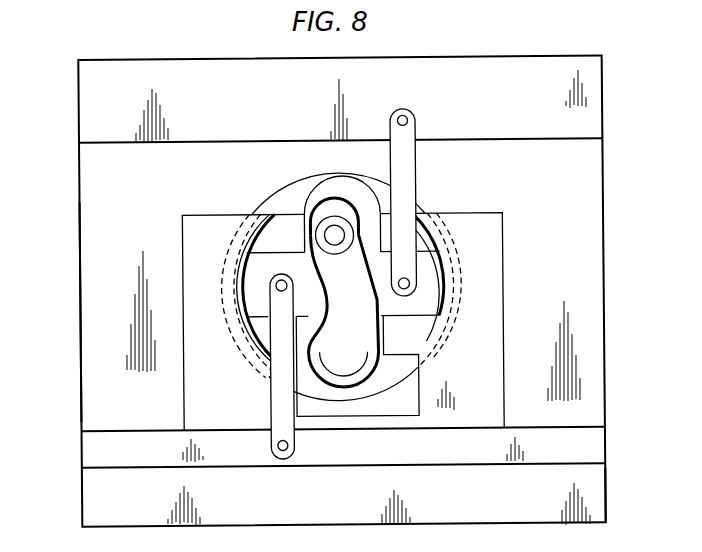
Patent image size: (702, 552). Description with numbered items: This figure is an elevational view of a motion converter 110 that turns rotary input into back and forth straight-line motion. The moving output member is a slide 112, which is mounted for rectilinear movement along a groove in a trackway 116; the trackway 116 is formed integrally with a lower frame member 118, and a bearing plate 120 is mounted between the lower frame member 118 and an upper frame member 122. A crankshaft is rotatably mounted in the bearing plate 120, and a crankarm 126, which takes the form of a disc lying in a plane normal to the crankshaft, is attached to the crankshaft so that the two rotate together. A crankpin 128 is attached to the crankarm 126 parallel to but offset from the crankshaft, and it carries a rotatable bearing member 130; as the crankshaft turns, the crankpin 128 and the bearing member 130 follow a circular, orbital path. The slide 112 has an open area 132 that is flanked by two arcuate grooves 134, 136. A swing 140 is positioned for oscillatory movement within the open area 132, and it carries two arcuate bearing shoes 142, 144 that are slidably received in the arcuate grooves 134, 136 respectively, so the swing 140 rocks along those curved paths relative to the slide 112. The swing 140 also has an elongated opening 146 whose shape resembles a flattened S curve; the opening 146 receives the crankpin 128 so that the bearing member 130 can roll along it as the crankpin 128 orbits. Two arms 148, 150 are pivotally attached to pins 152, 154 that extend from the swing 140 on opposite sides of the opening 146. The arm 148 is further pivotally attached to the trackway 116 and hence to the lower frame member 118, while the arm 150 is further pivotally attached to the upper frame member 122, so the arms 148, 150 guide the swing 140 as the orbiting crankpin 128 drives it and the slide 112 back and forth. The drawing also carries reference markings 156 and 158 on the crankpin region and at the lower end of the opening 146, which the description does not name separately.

The motion converter 110 is at (73, 59).
The slide 112 is at (503, 240).
The trackway 116 is at (134, 464).
The lower frame member 118 is at (598, 484).
The bearing plate 120 is at (88, 311).
The upper frame member 122 is at (558, 57).
The crankarm 126 is at (265, 204).
The crankpin 128 is at (337, 240).
The bearing member 130 is at (327, 218).
The open area 132 is at (395, 402).
The arcuate groove 134 is at (249, 368).
The arcuate groove 136 is at (445, 346).
The swing 140 is at (281, 250).
The arcuate bearing shoe 142 is at (244, 277).
The arcuate bearing shoe 144 is at (436, 251).
The elongated opening 146 is at (358, 323).
The arm 148 is at (270, 432).
The arm 150 is at (408, 170).
The pin 152 is at (276, 288).
The pin 154 is at (415, 284).
The cam surface 156 is at (344, 203).
The pin 158 is at (340, 375).